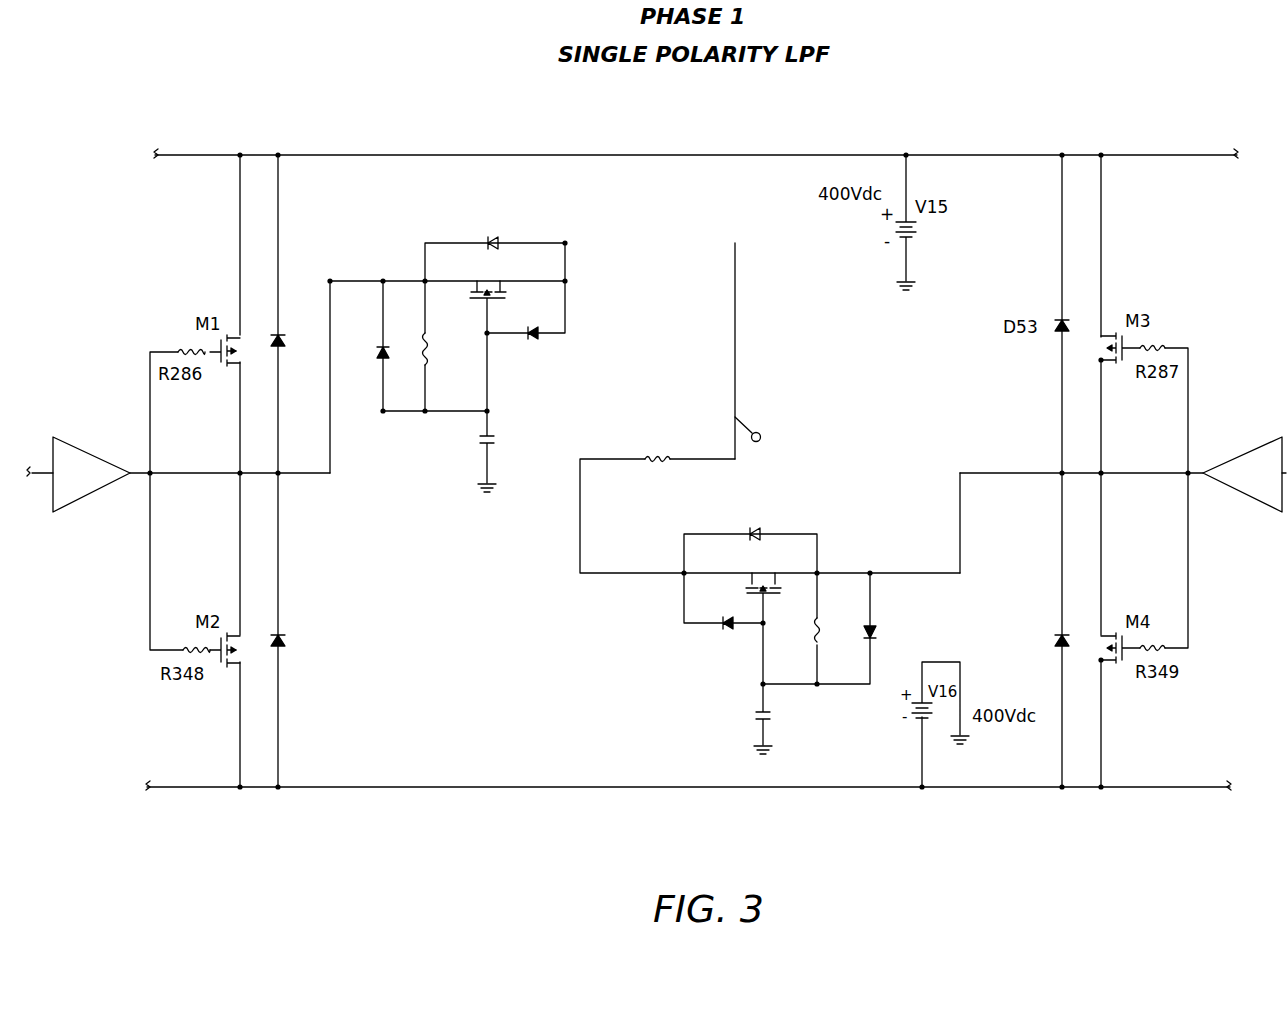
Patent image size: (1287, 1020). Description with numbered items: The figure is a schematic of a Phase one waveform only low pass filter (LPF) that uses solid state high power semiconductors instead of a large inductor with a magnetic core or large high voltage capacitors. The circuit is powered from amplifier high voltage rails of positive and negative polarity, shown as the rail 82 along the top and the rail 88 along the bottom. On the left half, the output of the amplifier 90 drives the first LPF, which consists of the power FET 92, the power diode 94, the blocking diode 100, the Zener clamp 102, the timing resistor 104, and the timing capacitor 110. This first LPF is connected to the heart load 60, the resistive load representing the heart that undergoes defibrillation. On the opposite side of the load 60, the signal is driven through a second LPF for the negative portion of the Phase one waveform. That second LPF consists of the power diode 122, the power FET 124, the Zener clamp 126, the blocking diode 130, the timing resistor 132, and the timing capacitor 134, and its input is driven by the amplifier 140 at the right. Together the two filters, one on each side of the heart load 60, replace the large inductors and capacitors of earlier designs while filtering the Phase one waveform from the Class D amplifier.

The positive high voltage rail 82 is at (612, 155).
The negative high voltage rail 88 is at (808, 788).
The amplifier 90 is at (103, 455).
The amplifier 140 is at (1238, 455).
The power diode 94 is at (472, 222).
The power FET 92 is at (505, 299).
The Zener clamp 102 is at (535, 343).
The timing resistor 104 is at (430, 346).
The blocking diode 100 is at (383, 360).
The timing capacitor 110 is at (497, 440).
The heart load 60 is at (657, 468).
The power diode 122 is at (780, 518).
The power FET 124 is at (735, 583).
The Zener clamp 126 is at (722, 626).
The blocking diode 130 is at (878, 630).
The timing resistor 132 is at (822, 637).
The timing capacitor 134 is at (755, 705).